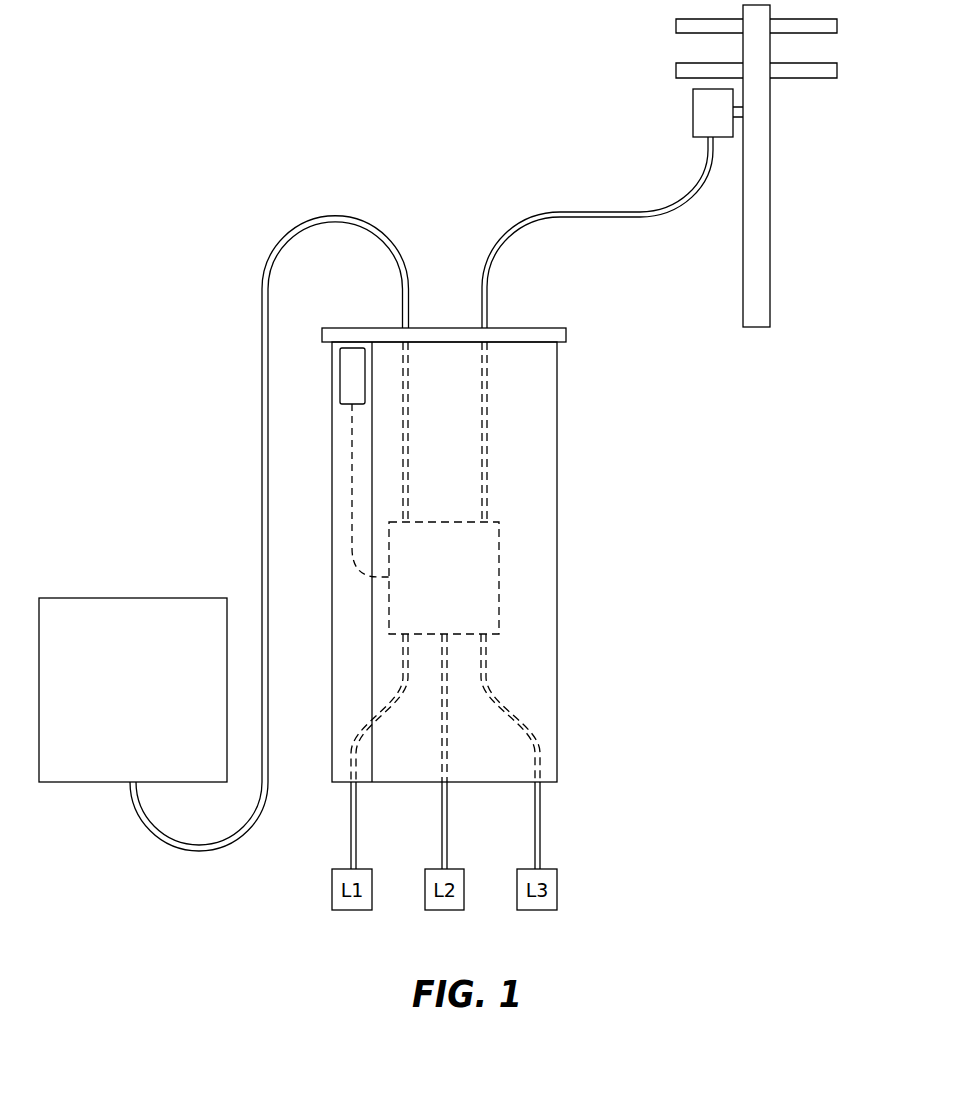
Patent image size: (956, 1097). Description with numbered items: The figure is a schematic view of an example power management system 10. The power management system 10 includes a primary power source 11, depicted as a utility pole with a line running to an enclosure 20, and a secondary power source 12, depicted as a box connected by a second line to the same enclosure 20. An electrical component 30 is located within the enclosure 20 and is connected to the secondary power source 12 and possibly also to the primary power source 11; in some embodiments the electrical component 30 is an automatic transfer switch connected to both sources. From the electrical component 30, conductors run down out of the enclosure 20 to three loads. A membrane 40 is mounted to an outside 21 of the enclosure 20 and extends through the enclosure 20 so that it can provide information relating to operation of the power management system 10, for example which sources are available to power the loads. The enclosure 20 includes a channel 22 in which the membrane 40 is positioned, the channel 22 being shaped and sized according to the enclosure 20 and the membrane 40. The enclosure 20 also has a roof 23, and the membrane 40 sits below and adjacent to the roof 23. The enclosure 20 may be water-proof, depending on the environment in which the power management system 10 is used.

The power management system 10 is at (140, 68).
The primary power source 11 is at (771, 162).
The secondary power source 12 is at (131, 597).
The enclosure 20 is at (465, 582).
The outside 21 is at (332, 530).
The channel 22 is at (332, 456).
The roof 23 is at (373, 326).
The electrical component 30 is at (499, 578).
The membrane 40 is at (340, 376).